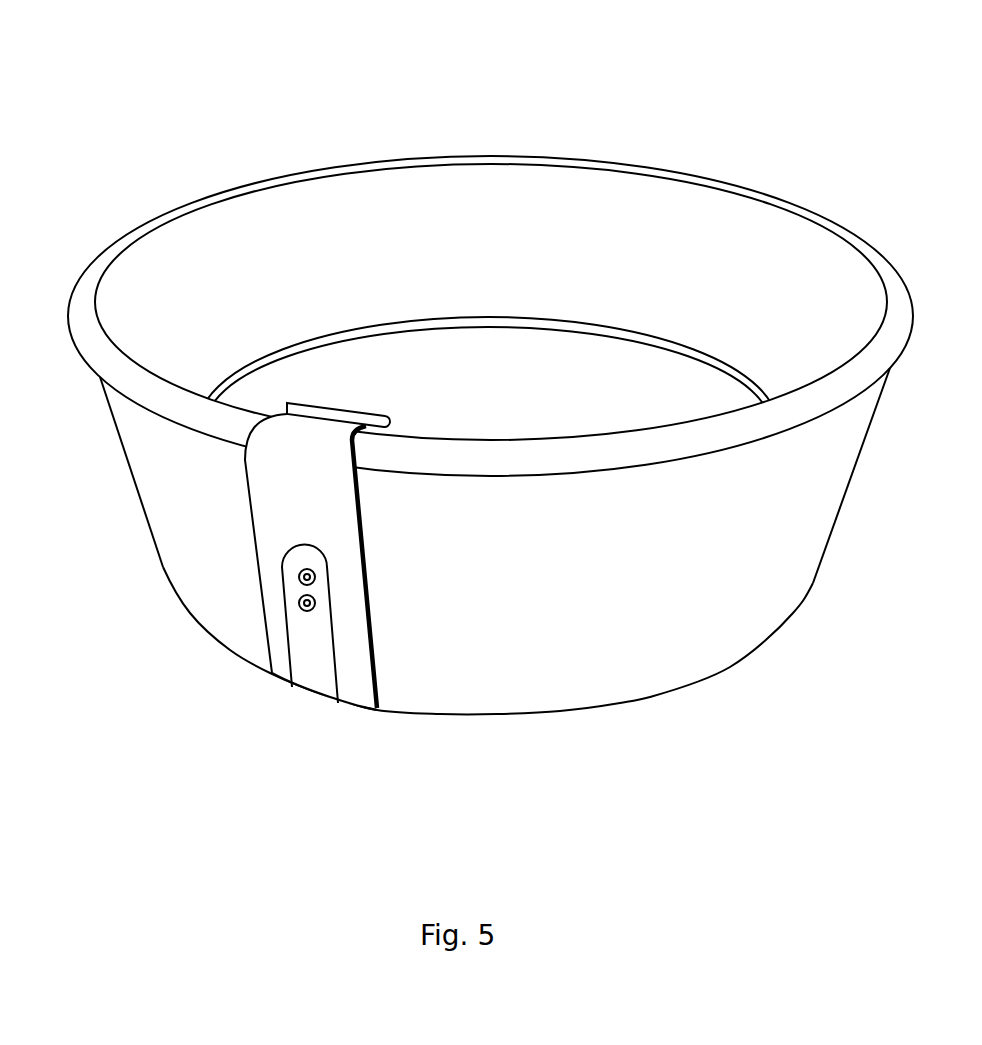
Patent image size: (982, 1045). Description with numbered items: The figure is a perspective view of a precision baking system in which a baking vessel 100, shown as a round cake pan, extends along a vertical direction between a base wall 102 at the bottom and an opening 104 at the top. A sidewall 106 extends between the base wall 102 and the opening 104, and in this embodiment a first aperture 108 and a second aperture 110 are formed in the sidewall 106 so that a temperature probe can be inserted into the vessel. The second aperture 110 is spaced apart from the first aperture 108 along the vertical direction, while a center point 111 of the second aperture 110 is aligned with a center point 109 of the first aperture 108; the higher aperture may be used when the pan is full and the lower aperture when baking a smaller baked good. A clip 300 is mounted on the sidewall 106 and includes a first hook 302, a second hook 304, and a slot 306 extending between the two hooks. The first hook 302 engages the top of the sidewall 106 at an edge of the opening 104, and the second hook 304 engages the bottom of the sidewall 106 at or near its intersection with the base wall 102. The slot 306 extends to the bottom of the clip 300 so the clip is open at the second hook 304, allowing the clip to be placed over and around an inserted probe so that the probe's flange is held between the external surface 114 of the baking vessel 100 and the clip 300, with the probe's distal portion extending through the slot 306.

The baking vessel 100 is at (503, 396).
The base wall 102 is at (650, 697).
The opening 104 is at (713, 225).
The sidewall 106 is at (792, 518).
The first aperture 108 is at (314, 572).
The center point of first aperture 109 is at (298, 578).
The second aperture 110 is at (315, 598).
The center point of second aperture 111 is at (298, 605).
The external surface 114 is at (578, 584).
The clip 300 is at (255, 541).
The first hook 302 is at (266, 434).
The second hook 304 is at (360, 710).
The slot 306 is at (303, 640).